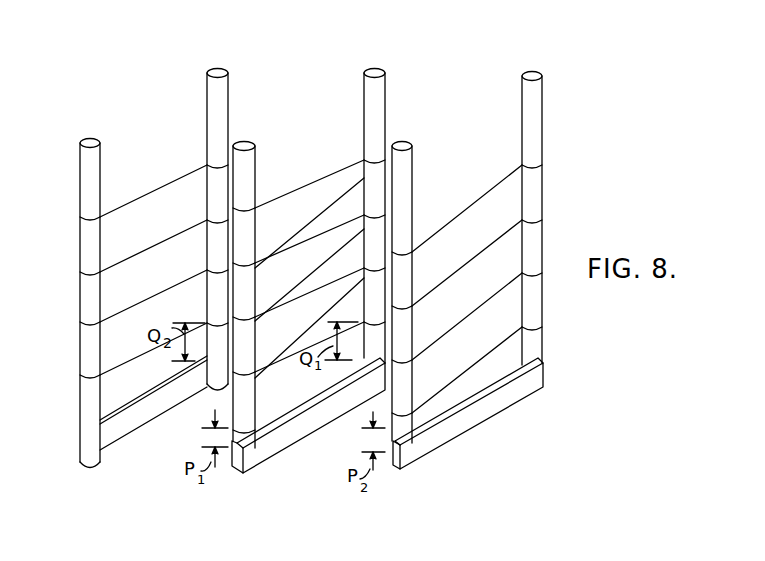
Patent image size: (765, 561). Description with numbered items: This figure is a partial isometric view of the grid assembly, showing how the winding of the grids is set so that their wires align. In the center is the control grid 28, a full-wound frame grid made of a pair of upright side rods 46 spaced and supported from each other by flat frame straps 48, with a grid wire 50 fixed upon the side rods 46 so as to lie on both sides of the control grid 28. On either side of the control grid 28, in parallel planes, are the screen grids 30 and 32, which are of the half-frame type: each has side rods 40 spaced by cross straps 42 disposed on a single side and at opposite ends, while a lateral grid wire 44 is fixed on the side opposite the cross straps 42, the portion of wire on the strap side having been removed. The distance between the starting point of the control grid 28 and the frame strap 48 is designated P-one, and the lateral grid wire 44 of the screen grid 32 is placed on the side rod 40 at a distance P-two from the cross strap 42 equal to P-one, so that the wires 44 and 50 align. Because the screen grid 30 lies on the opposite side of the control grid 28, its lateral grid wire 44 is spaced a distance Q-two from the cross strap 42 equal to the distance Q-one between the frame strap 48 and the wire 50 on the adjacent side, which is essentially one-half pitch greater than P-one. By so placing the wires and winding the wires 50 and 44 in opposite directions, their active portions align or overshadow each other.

The control grid 28 is at (422, 70).
The screen grid 30 is at (223, 83).
The screen grid 32 is at (574, 70).
The side rod 40 is at (98, 147).
The cross strap 42 is at (142, 418).
The lateral grid wire 44 is at (143, 197).
The side rod 46 is at (254, 150).
The frame strap 48 is at (305, 430).
The grid wire 50 is at (291, 191).